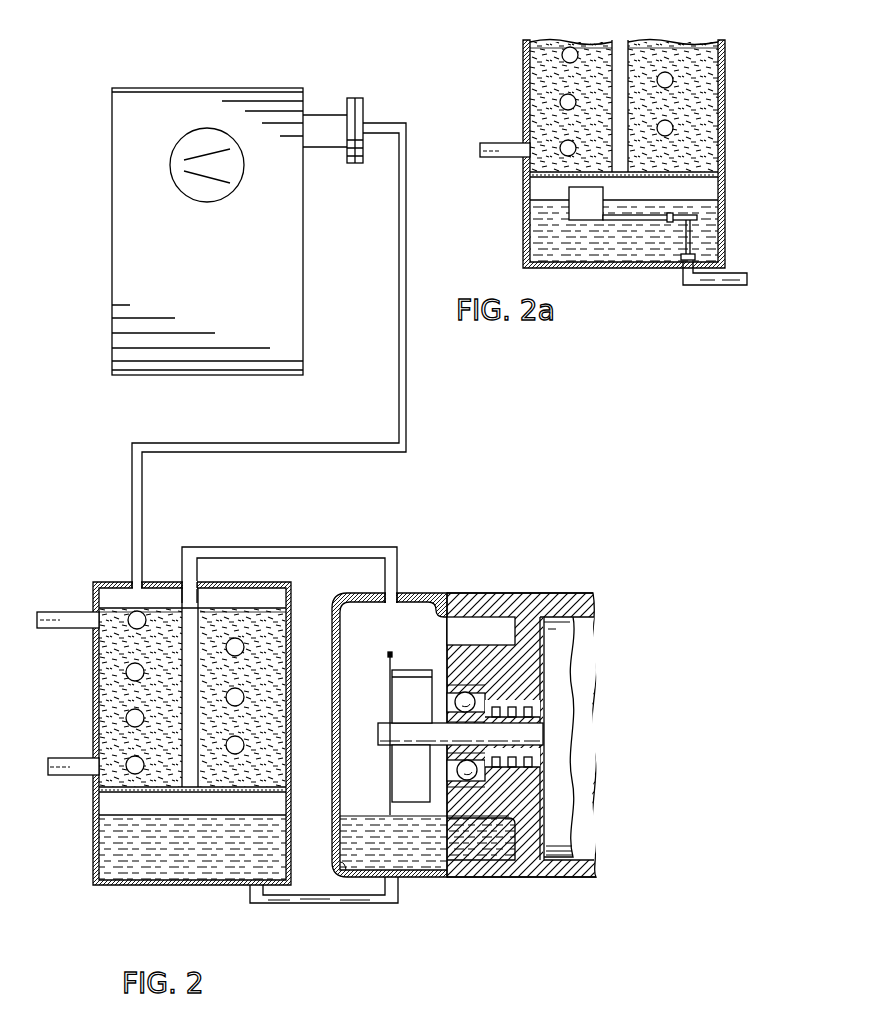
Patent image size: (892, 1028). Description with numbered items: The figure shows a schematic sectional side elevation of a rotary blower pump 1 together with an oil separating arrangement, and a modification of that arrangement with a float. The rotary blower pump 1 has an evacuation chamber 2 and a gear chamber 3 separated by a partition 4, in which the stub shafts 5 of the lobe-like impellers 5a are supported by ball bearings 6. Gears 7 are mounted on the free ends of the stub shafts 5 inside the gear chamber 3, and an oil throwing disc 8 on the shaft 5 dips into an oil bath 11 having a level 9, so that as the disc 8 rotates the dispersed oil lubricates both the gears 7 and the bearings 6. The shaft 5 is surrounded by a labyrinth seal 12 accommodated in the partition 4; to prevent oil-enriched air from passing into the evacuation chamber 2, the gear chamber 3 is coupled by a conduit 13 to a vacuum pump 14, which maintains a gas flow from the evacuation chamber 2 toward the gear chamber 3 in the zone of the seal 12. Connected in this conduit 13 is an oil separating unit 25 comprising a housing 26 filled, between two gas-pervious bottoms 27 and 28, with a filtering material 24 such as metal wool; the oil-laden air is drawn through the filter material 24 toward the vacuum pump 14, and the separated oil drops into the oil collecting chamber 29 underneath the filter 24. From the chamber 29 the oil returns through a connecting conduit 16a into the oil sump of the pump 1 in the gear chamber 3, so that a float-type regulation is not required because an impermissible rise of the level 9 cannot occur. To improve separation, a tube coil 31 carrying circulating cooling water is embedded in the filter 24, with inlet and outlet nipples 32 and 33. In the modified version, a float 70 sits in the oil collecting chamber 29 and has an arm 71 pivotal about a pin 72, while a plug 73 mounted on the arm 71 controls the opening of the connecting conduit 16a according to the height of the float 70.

In FIG. 2, the rotary blower pump 1 is at (475, 576).
In FIG. 2, the evacuation chamber 2 is at (583, 622).
In FIG. 2, the gear chamber 3 is at (362, 634).
In FIG. 2, the partition 4 is at (496, 866).
In FIG. 2, the stub shaft 5 is at (380, 736).
In FIG. 2, the lobe-like impeller 5a is at (573, 786).
In FIG. 2, the ball bearing 6 is at (486, 697).
In FIG. 2, the gear 7 is at (409, 690).
In FIG. 2, the oil throwing disc 8 is at (388, 657).
In FIG. 2, the oil level 9 is at (368, 806).
In FIG. 2, the oil bath 11 is at (410, 863).
In FIG. 2, the labyrinth seal 12 is at (552, 705).
In FIG. 2, the conduit 13 is at (407, 402).
In FIG. 2, the vacuum pump 14 is at (304, 285).
In FIG. 2, the connecting conduit 16a is at (316, 895).
In FIG. 2A, the connecting conduit 16a is at (719, 280).
In FIG. 2, the filtering material 24 is at (110, 731).
In FIG. 2A, the filtering material 24 is at (542, 117).
In FIG. 2, the oil separating unit 25 is at (88, 703).
In FIG. 2A, the oil separating unit 25 is at (516, 84).
In FIG. 2, the housing 26 is at (93, 667).
In FIG. 2A, the housing 26 is at (523, 54).
In FIG. 2, the gas-pervious bottom 27 is at (106, 793).
In FIG. 2A, the gas-pervious bottom 27 is at (537, 181).
In FIG. 2, the gas-pervious bottom 28 is at (100, 605).
In FIG. 2, the oil collecting chamber 29 is at (222, 813).
In FIG. 2A, the oil collecting chamber 29 is at (652, 199).
In FIG. 2, the tube coil 31 is at (245, 645).
In FIG. 2A, the tube coil 31 is at (672, 80).
In FIG. 2, the inlet nipple 32 is at (46, 630).
In FIG. 2, the outlet nipple 33 is at (56, 776).
In FIG. 2A, the outlet nipple 33 is at (486, 158).
In FIG. 2A, the float 70 is at (598, 216).
In FIG. 2A, the arm 71 is at (618, 221).
In FIG. 2A, the pin 72 is at (674, 215).
In FIG. 2A, the plug 73 is at (682, 257).